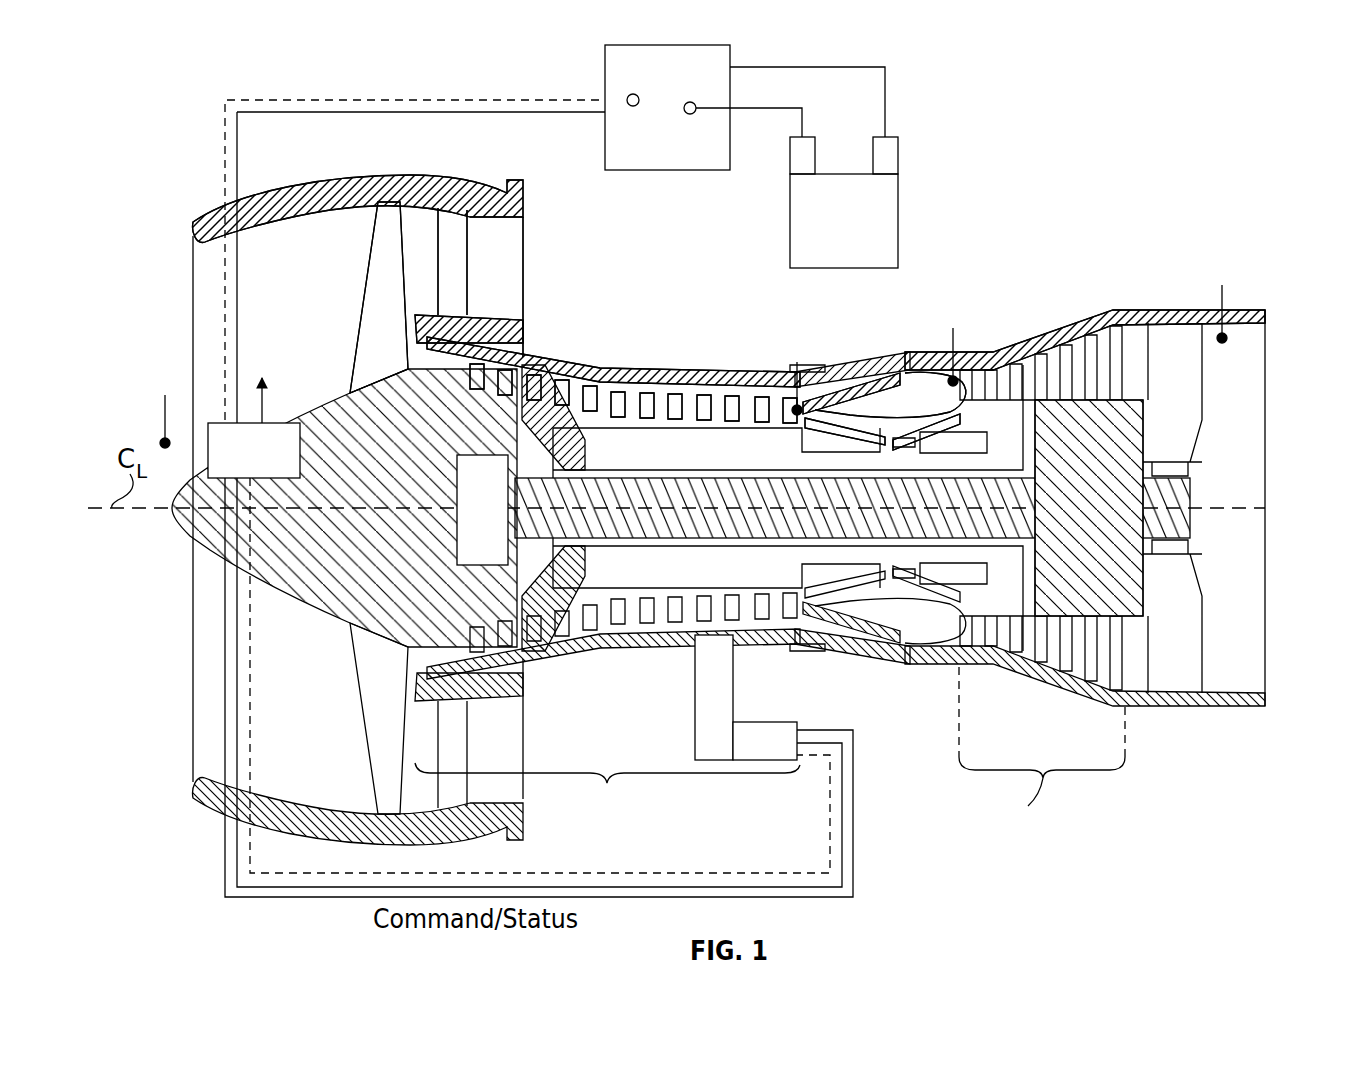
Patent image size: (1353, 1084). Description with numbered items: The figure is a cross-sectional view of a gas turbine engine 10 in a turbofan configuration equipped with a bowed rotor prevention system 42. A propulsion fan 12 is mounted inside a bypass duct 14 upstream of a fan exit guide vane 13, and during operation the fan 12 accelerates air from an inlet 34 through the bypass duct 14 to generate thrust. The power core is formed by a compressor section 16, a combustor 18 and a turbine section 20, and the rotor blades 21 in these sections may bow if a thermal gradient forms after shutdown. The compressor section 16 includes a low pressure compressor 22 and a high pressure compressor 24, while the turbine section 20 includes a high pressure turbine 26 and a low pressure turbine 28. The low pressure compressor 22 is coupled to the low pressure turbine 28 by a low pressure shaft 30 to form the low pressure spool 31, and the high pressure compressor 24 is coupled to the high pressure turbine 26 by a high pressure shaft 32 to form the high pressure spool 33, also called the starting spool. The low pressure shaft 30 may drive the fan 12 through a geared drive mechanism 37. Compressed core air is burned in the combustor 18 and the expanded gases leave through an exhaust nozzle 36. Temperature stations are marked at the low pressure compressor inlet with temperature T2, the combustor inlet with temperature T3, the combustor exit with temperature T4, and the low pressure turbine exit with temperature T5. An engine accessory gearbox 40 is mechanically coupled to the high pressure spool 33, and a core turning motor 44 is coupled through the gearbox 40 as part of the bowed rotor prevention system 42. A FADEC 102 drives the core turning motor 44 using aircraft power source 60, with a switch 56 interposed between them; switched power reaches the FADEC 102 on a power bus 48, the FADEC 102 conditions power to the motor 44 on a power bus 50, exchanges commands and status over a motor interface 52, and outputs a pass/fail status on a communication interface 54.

The gas turbine engine 10 is at (198, 138).
The propulsion fan 12 is at (380, 290).
The fan exit guide vane 13 is at (453, 220).
The bypass duct 14 is at (512, 268).
The compressor section 16 is at (607, 787).
The combustor 18 is at (900, 395).
The turbine section 20 is at (1042, 754).
The rotor blades 21 is at (792, 408).
The low pressure compressor 22 is at (520, 662).
The high pressure compressor 24 is at (658, 648).
The high pressure turbine 26 is at (1006, 664).
The low pressure turbine 28 is at (1114, 694).
The low pressure shaft 30 is at (850, 528).
The low pressure spool 31 is at (1117, 418).
The high pressure shaft 32 is at (825, 555).
The high pressure spool 33 is at (643, 432).
The inlet 34 is at (198, 318).
The exhaust nozzle 36 is at (1248, 422).
The geared drive mechanism 37 is at (462, 533).
The engine accessory gearbox 40 is at (695, 728).
The bowed rotor prevention system 42 is at (960, 80).
The core turning motor 44 is at (757, 722).
The power bus 48 is at (380, 98).
The power bus 50 is at (748, 873).
The motor interface 52 is at (678, 900).
The communication interface 54 is at (266, 406).
The switch 56 is at (638, 172).
The aircraft power source 60 is at (790, 245).
The FADEC 102 is at (297, 472).
The temperature T2 is at (166, 406).
The temperature T3 is at (800, 374).
The temperature T4 is at (951, 342).
The temperature T5 is at (1223, 299).